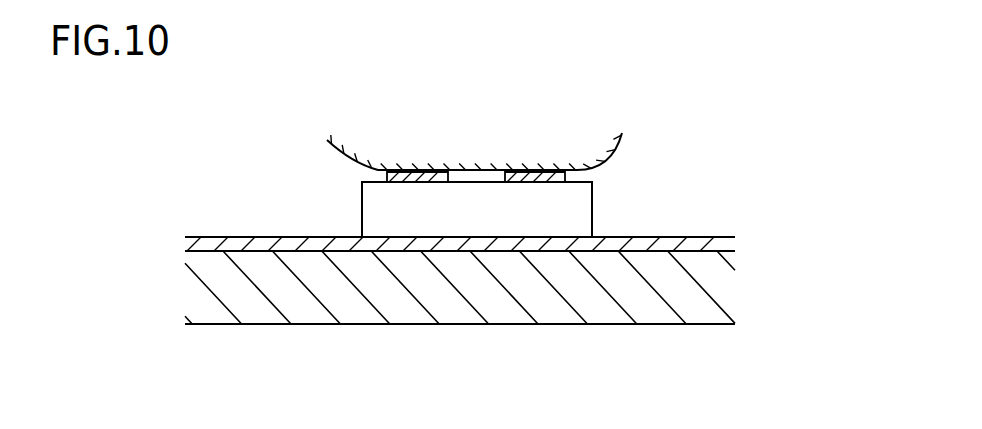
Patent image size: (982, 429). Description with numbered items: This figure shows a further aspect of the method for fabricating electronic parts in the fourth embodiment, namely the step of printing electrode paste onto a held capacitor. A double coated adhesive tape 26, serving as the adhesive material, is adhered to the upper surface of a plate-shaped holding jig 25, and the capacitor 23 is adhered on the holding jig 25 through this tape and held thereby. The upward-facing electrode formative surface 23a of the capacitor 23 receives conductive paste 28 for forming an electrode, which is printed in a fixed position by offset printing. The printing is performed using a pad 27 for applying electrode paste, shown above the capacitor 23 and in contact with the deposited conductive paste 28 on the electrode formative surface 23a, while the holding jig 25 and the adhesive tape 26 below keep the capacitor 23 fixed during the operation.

The capacitor 23 is at (597, 198).
The electrode formative surface 23a is at (370, 207).
The holding jig 25 is at (362, 315).
The double coated adhesive tape 26 is at (237, 242).
The pad 27 is at (382, 171).
The conductive paste 28 is at (533, 176).